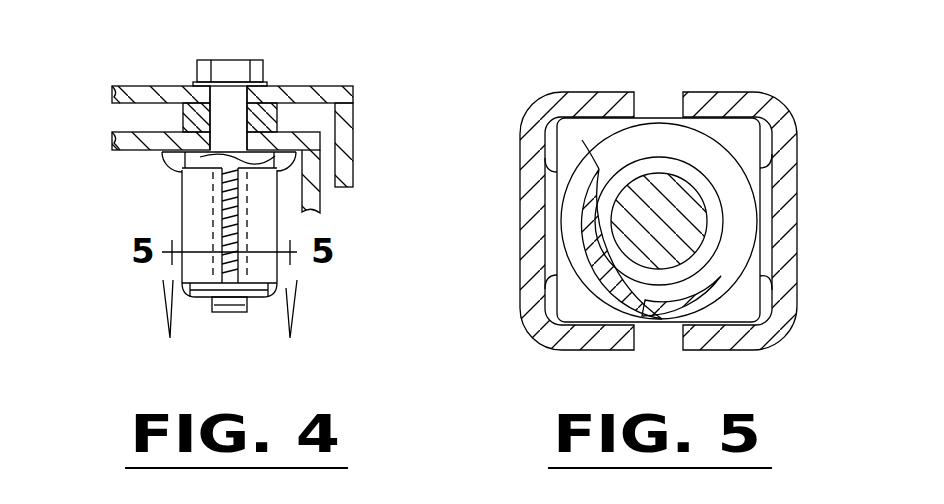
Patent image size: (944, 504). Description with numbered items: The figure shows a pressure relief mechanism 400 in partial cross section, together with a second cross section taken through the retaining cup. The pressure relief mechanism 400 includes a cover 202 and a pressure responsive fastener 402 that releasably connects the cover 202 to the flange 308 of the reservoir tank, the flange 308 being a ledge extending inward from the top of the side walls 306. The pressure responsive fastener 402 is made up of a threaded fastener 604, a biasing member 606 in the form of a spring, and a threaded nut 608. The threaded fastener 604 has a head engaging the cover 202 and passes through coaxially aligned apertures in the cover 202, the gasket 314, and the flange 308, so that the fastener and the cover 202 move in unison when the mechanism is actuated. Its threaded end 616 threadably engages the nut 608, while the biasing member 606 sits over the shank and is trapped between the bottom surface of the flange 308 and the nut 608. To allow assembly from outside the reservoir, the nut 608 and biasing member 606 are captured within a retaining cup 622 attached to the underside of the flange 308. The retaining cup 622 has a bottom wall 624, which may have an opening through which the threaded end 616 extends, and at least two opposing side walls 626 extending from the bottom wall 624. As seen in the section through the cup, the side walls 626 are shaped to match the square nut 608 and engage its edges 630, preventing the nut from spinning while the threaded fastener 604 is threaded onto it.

In FIG. 4, the cover 202 is at (143, 86).
In FIG. 4, the gasket 314 is at (185, 108).
In FIG. 4, the side walls 306 is at (322, 207).
In FIG. 4, the flange 308 is at (162, 155).
In FIG. 4, the pressure relief mechanism 400 is at (355, 83).
In FIG. 4, the pressure responsive fastener 402 is at (221, 58).
In FIG. 4, the threaded fastener 604 is at (266, 70).
In FIG. 5, the threaded fastener 604 is at (706, 210).
In FIG. 4, the biasing member 606 is at (232, 265).
In FIG. 5, the biasing member 606 is at (588, 160).
In FIG. 4, the threaded nut 608 is at (207, 298).
In FIG. 5, the threaded nut 608 is at (764, 145).
In FIG. 4, the threaded end 616 is at (221, 312).
In FIG. 4, the retaining cup 622 is at (187, 202).
In FIG. 5, the retaining cup 622 is at (732, 92).
In FIG. 5, the bottom wall 624 is at (764, 233).
In FIG. 5, the opposing side walls 626 is at (798, 266).
In FIG. 5, the edges 630 is at (737, 308).